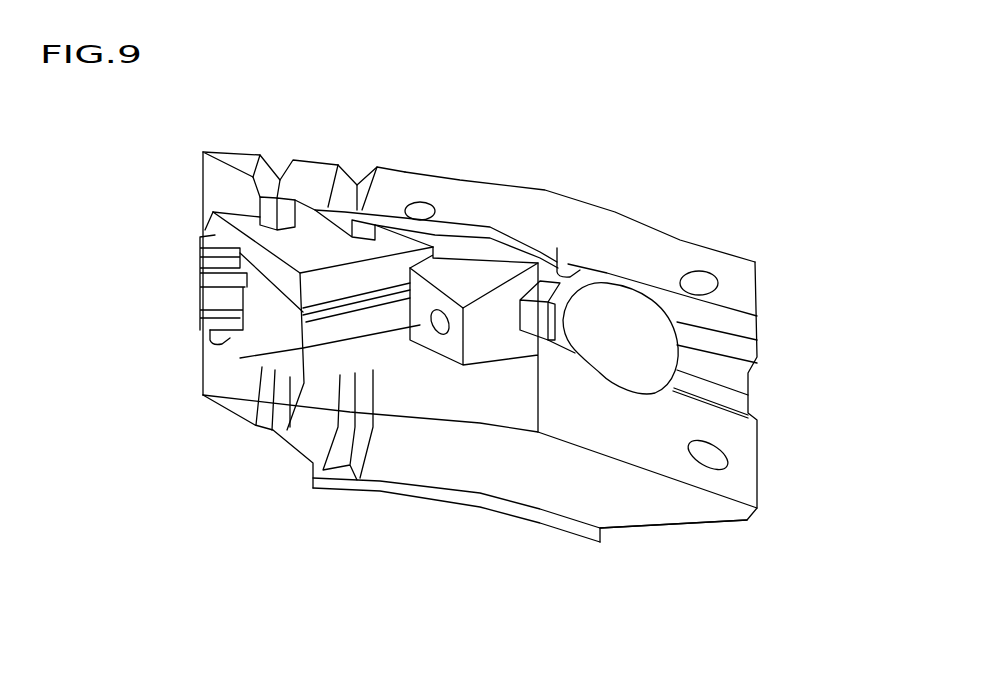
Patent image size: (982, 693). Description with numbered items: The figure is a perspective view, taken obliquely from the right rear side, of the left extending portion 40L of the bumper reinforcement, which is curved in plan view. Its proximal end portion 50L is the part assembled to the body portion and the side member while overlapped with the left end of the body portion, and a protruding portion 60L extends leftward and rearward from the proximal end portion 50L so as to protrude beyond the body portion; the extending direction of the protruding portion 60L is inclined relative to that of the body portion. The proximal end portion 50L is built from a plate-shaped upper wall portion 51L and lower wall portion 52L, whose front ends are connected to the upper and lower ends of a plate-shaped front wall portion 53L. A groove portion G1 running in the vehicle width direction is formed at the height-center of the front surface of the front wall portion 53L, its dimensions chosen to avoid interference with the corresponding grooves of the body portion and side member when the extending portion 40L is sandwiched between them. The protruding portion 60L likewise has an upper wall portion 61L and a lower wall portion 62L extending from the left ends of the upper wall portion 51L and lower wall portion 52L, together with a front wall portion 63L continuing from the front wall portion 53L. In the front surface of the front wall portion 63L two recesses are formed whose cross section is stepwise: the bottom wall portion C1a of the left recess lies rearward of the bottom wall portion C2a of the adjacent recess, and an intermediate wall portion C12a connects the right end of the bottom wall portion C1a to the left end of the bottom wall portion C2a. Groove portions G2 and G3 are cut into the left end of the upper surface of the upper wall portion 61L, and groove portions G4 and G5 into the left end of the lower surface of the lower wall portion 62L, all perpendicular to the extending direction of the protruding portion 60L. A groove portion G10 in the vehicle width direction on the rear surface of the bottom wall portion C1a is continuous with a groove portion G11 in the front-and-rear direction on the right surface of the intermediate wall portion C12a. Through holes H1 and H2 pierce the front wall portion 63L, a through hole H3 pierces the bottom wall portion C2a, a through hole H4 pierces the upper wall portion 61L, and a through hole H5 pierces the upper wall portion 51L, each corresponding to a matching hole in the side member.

The extending portion 40L is at (790, 207).
The front wall portion 63L is at (218, 194).
The groove portion G3 is at (278, 183).
The groove portion G2 is at (357, 185).
The through hole H4 is at (421, 207).
The upper wall portion 61L is at (460, 190).
The protruding portion 60L is at (500, 192).
The through hole H1 is at (557, 250).
The proximal end portion 50L is at (612, 240).
The upper wall portion 51L is at (657, 250).
The through hole H5 is at (700, 282).
The front wall portion 53L is at (733, 318).
The groove portion G1 is at (748, 393).
The through hole H2 is at (702, 458).
The lower wall portion 52L is at (588, 500).
The lower wall portion 62L is at (480, 452).
The bottom wall portion C2a is at (452, 347).
The through hole H3 is at (438, 330).
The groove portion G10 is at (233, 302).
The bottom wall portion C1a is at (210, 338).
The intermediate wall portion C12a is at (326, 367).
The groove portion G11 is at (320, 318).
The groove portion G4 is at (322, 478).
The groove portion G5 is at (262, 432).